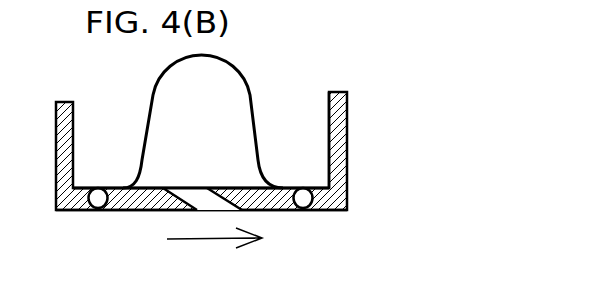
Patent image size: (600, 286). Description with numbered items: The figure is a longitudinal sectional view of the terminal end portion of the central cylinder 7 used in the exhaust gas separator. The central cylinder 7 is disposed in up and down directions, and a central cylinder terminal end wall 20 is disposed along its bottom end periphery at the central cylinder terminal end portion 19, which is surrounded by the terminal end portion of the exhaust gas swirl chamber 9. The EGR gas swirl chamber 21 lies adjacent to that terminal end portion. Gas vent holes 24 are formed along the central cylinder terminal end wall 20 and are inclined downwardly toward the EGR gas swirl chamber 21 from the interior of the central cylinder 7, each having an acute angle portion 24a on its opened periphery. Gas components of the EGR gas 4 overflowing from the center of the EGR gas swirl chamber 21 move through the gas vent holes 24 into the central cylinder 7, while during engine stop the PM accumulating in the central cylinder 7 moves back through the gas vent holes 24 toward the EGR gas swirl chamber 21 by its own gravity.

The central cylinder 7 is at (349, 119).
The exhaust gas swirl chamber 9 is at (440, 165).
The central cylinder terminal end portion 19 is at (333, 170).
The central cylinder terminal end wall 20 is at (325, 208).
The EGR gas swirl chamber 21 is at (443, 260).
The gas vent hole 24 is at (297, 188).
The acute angle portion 24a is at (153, 212).
The EGR gas 4 is at (193, 239).